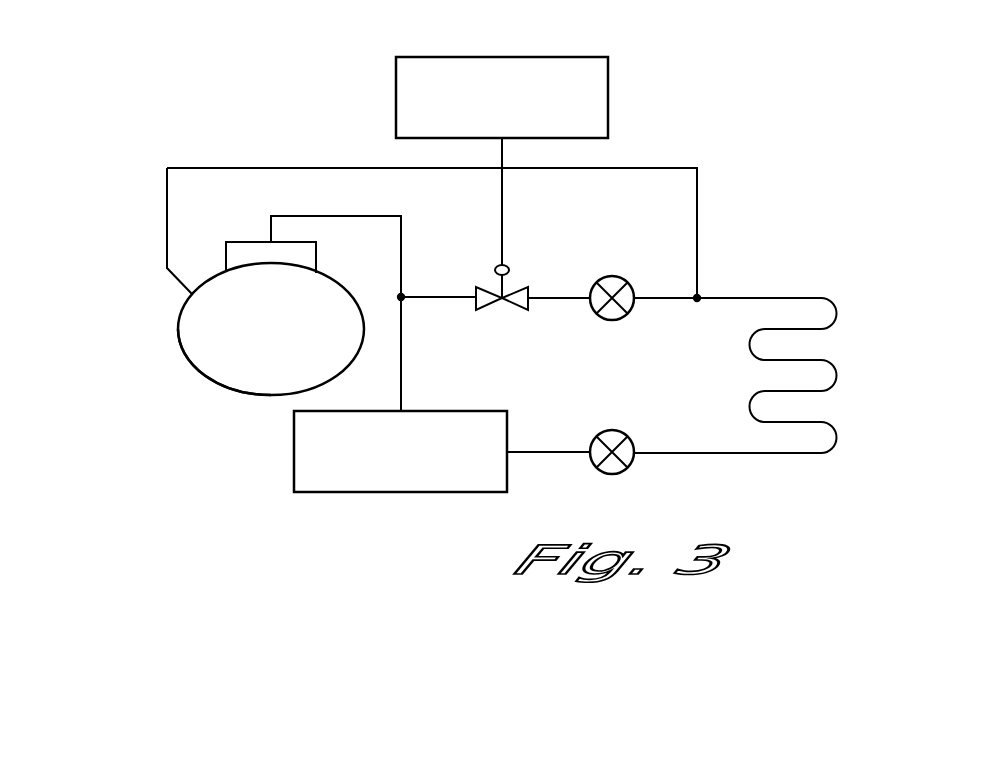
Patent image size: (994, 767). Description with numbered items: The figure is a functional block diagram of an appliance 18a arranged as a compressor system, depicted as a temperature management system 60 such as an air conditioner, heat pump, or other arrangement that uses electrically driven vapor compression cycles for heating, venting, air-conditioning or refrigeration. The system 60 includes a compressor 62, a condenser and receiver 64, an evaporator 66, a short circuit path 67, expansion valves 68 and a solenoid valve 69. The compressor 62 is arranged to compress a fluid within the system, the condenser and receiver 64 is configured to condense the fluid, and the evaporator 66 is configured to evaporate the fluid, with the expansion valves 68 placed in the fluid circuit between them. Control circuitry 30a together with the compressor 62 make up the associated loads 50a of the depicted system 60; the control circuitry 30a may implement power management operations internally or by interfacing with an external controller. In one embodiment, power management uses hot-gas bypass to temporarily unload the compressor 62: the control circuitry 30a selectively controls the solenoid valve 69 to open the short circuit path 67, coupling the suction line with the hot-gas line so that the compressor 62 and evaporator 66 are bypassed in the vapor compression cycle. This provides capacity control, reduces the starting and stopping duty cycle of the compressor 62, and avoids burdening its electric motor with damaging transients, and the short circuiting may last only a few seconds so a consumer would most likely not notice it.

The appliance 18a is at (98, 215).
The control circuitry 30a is at (657, 48).
The loads 50a is at (195, 387).
The temperature management system 60 is at (842, 215).
The compressor 62 is at (178, 338).
The condenser and receiver 64 is at (393, 493).
The evaporator 66 is at (837, 440).
The short circuit path 67 is at (638, 281).
The expansion valves 68 is at (612, 320).
The solenoid valve 69 is at (495, 268).